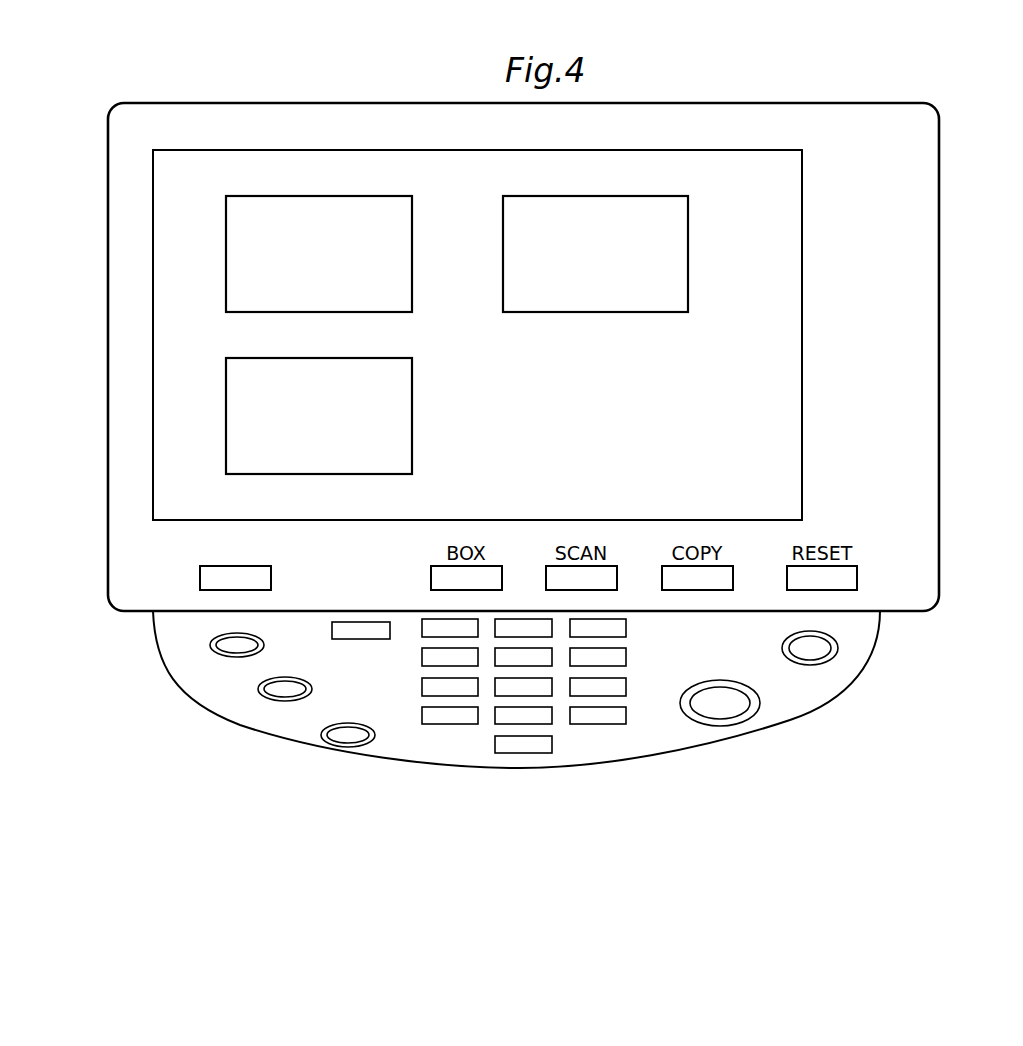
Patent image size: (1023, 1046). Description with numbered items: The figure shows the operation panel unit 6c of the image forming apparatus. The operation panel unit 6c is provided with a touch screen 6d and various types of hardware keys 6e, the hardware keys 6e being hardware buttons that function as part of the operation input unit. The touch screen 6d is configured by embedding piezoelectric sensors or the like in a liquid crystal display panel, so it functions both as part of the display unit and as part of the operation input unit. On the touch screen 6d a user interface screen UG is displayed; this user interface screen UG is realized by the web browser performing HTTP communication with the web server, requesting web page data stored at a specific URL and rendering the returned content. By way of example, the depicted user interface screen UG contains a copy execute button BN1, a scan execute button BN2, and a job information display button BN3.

The operation panel unit 6c is at (939, 170).
The touch screen 6d is at (153, 200).
The user interface screen UG is at (802, 463).
The copy execute button BN1 is at (226, 282).
The scan execute button BN2 is at (688, 262).
The job information display button BN3 is at (226, 413).
The hardware keys 6e is at (787, 698).